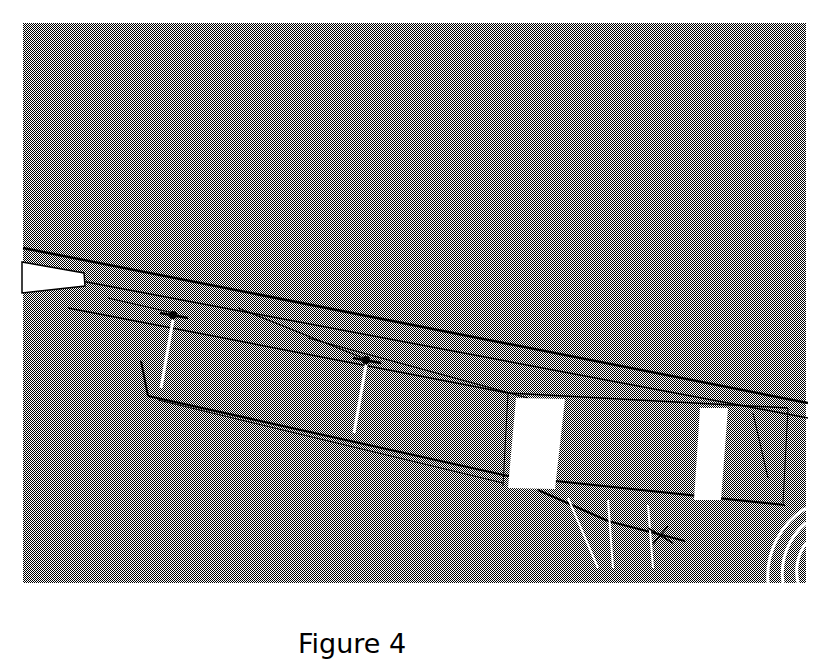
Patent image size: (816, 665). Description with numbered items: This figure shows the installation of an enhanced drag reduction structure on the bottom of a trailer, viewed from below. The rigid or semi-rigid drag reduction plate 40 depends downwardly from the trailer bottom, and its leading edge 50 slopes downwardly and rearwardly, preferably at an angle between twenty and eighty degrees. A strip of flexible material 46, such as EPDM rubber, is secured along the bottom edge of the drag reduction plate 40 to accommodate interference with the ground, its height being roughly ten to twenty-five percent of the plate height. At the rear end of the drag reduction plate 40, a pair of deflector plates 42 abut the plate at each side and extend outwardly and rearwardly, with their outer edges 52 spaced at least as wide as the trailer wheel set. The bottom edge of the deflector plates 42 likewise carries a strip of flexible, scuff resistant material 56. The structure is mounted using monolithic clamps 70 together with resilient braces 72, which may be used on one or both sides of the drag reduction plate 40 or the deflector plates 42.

The drag reduction plate 40 is at (311, 401).
The deflector plates 42 is at (619, 448).
The flexible material 46 is at (261, 418).
The leading edge 50 is at (133, 353).
The outer edges 52 is at (758, 437).
The flexible, scuff resistant material 56 is at (667, 483).
The monolithic clamps 70 is at (170, 304).
The resilient braces 72 is at (163, 358).